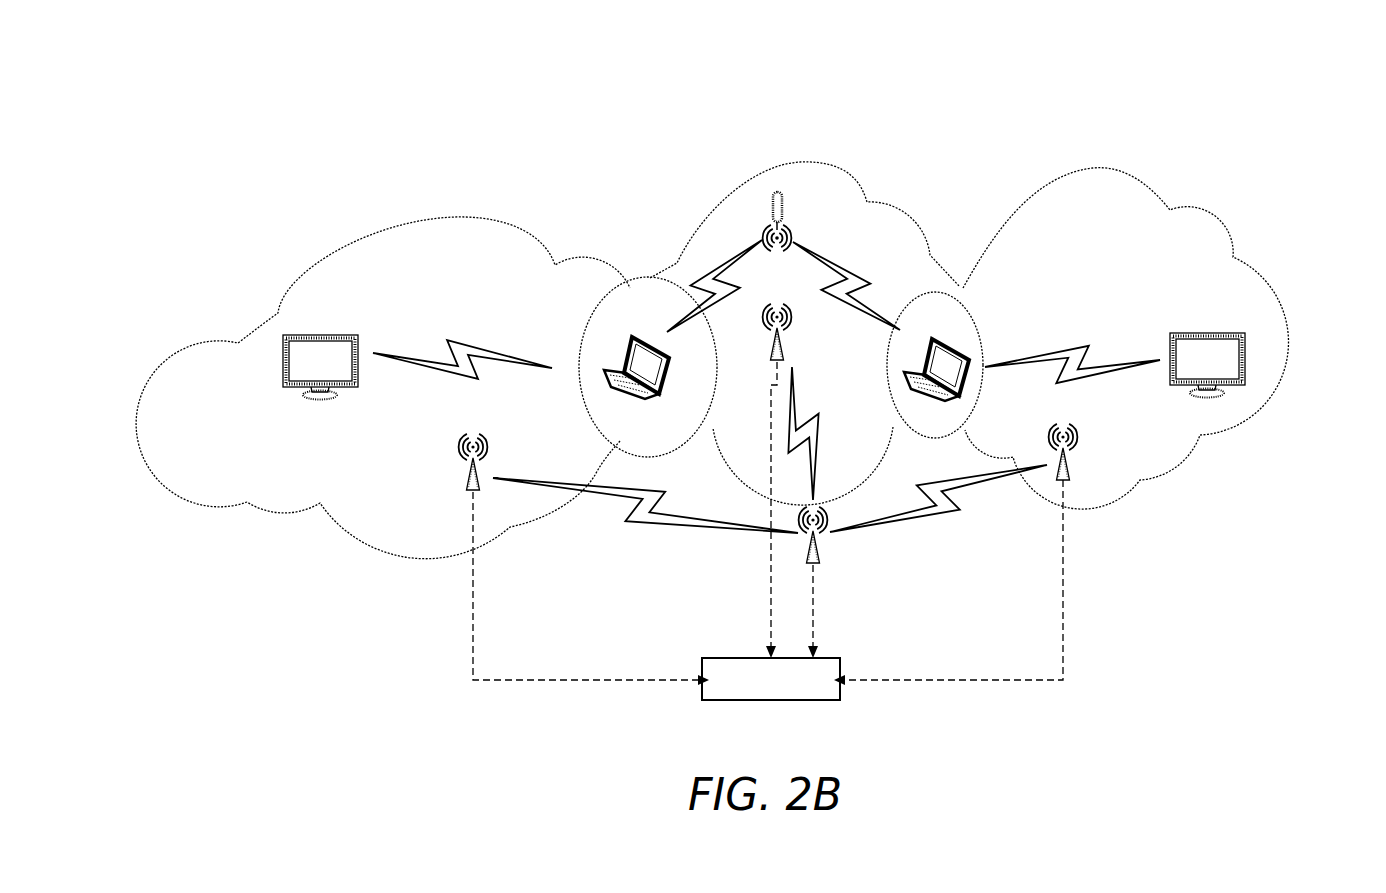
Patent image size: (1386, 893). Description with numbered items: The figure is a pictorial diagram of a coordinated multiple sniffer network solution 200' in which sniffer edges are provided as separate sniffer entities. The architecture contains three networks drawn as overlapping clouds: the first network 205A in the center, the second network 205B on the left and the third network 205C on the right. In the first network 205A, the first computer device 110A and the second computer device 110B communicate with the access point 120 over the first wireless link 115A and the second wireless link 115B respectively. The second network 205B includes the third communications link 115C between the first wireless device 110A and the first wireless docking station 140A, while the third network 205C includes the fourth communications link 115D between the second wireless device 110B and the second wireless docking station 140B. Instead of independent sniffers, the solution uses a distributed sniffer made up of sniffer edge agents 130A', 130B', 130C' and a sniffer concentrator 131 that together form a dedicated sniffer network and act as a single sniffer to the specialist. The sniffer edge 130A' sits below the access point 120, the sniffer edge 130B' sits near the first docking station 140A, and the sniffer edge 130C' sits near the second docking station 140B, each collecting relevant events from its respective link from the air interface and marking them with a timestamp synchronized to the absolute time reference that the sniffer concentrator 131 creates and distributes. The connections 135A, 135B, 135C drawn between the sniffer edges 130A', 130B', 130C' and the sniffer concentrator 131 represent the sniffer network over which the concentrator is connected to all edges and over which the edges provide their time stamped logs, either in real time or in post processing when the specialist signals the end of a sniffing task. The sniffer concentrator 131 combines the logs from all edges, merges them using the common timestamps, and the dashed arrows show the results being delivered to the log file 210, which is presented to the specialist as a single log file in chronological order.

The coordinated multiple sniffer network solution 200' is at (1262, 43).
The first network BSS3 205A is at (807, 165).
The second network BSS1 205B is at (473, 218).
The third network BSS2 205C is at (1150, 188).
The access point 120 is at (763, 187).
The first wireless link 115A is at (707, 267).
The second wireless link 115B is at (850, 267).
The third communications link 115C is at (425, 368).
The fourth communications link 115D is at (1087, 347).
The first computer device 110A is at (648, 395).
The second computer device 110B is at (923, 396).
The sniffer edge agent 130A' is at (820, 481).
The sniffer edge agent 130B' is at (584, 545).
The sniffer edge agent 130C' is at (1006, 554).
The sniffer concentrator 131 is at (820, 553).
The sniffer link 135A is at (817, 460).
The sniffer link 135B is at (672, 523).
The sniffer link 135C is at (950, 513).
The first wireless docking station 140A is at (283, 382).
The second wireless docking station 140B is at (1233, 377).
The log file 210 is at (834, 658).